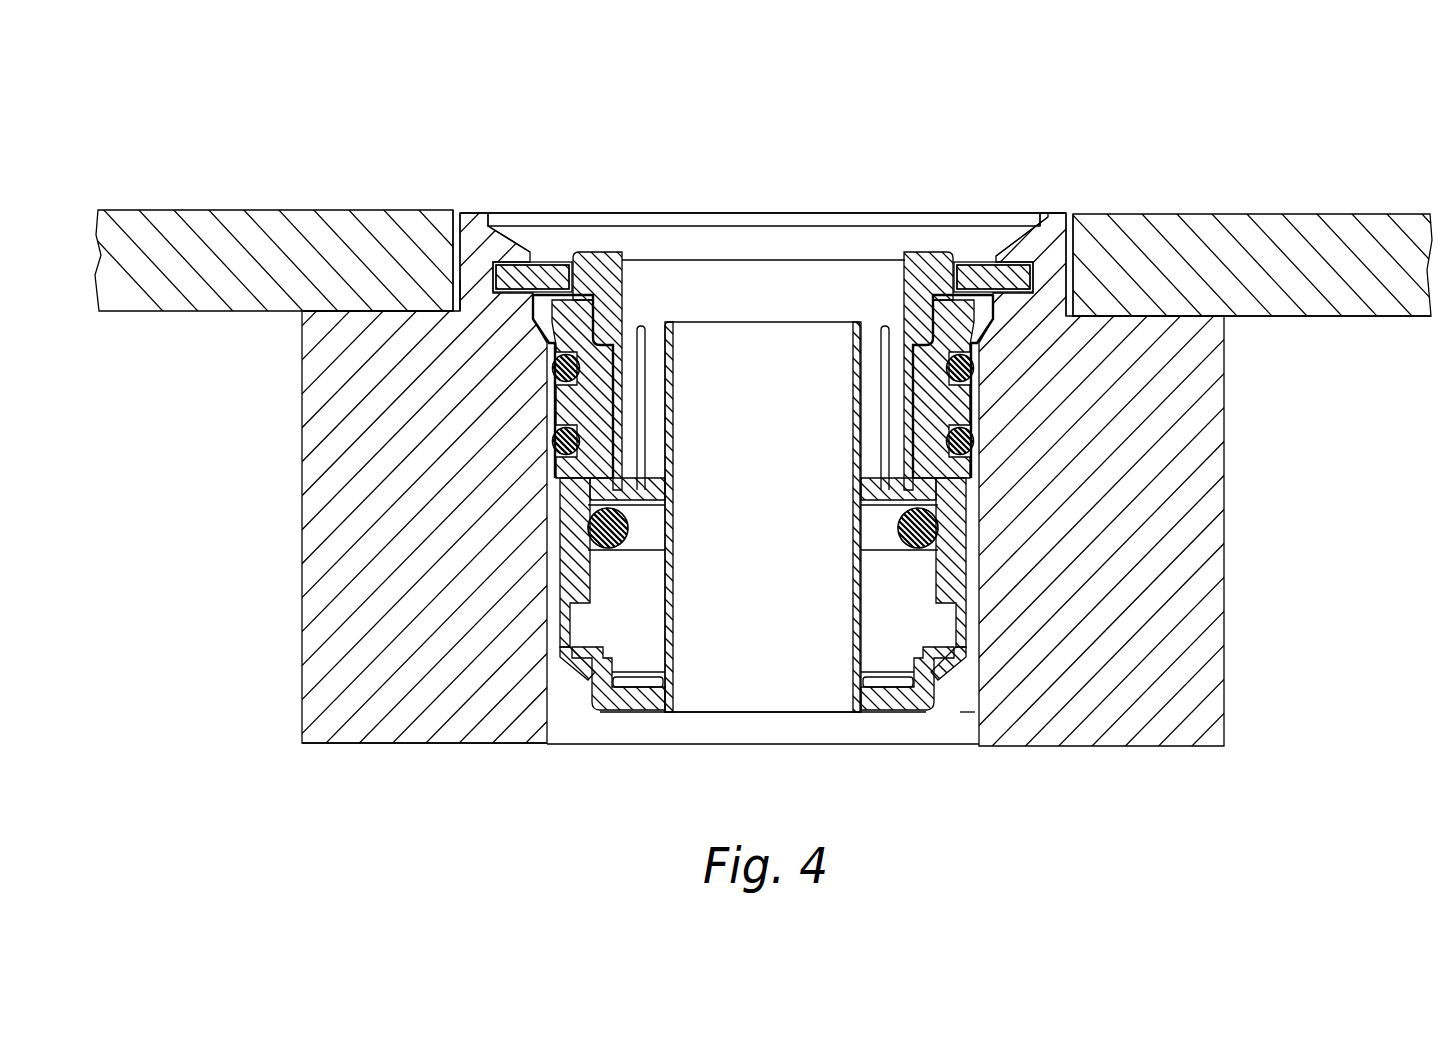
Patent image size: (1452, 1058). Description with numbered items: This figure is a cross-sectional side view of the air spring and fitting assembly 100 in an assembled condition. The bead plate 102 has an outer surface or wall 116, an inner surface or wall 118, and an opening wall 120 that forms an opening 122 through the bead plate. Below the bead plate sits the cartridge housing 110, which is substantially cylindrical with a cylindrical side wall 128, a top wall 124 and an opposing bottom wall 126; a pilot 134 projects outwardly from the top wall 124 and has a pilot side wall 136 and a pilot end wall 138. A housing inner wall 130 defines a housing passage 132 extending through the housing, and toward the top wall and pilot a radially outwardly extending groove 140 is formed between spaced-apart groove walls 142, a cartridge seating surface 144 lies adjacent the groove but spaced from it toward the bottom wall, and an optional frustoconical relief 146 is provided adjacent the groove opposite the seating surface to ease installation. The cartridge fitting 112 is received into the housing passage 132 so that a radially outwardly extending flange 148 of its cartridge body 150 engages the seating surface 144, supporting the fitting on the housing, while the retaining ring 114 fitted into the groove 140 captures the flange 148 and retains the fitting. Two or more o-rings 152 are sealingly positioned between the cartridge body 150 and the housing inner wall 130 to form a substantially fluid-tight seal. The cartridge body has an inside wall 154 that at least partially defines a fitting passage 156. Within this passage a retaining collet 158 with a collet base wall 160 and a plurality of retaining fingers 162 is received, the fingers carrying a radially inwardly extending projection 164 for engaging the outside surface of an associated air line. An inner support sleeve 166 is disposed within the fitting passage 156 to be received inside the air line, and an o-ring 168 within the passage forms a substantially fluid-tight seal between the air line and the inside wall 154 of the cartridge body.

The air spring and fitting assembly 100 is at (1160, 112).
The bead plate 102 is at (1333, 212).
The cartridge housing 110 is at (1232, 640).
The cartridge fitting 112 is at (547, 410).
The retaining ring 114 is at (1012, 250).
The outer surface or wall 116 is at (264, 190).
The inner surface or wall 118 is at (1372, 320).
The opening wall 120 is at (1045, 250).
The opening 122 is at (455, 203).
The top wall 124 is at (378, 315).
The bottom wall 126 is at (450, 745).
The cylindrical side wall 128 is at (298, 666).
The housing inner wall 130 is at (975, 714).
The housing passage 132 is at (686, 740).
The pilot 134 is at (452, 249).
The pilot side wall 136 is at (456, 292).
The pilot end wall 138 is at (985, 275).
The groove 140 is at (1038, 288).
The groove walls 142 is at (530, 268).
The cartridge seating surface 144 is at (540, 320).
The frustoconical relief 146 is at (1000, 256).
The flange 148 is at (570, 296).
The cartridge body 150 is at (562, 550).
The o-rings 152 is at (975, 440).
The inside wall 154 is at (613, 575).
The fitting passage 156 is at (788, 298).
The retaining collet 158 is at (602, 246).
The collet base wall 160 is at (704, 287).
The retaining fingers 162 is at (650, 416).
The projection 164 is at (855, 512).
The inner support sleeve 166 is at (866, 620).
The o-ring 168 is at (850, 585).